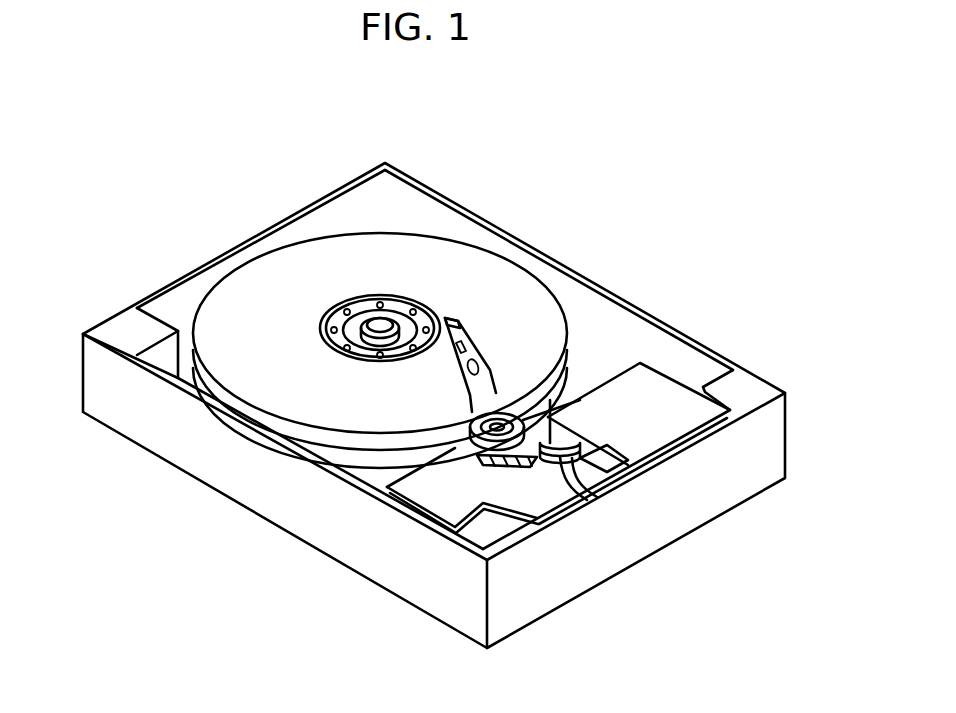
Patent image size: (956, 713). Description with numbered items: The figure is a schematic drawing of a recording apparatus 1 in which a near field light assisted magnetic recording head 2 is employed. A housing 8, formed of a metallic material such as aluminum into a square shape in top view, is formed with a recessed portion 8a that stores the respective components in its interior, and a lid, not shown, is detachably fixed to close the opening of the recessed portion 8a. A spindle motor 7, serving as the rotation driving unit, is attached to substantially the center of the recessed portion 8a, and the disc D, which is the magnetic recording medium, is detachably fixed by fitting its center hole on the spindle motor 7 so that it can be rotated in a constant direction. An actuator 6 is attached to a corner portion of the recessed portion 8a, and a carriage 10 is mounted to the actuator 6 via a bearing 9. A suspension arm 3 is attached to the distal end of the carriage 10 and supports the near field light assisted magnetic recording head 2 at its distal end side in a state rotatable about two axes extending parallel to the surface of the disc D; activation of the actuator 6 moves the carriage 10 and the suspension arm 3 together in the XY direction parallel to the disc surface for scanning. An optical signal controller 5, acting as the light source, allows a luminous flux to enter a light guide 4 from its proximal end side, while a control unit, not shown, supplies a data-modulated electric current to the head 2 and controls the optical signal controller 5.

The recording apparatus 1 is at (765, 142).
The near field light assisted magnetic recording head 2 is at (445, 317).
The suspension arm 3 is at (458, 323).
The light guide 4 is at (600, 500).
The optical signal controller 5 is at (657, 420).
The actuator 6 is at (527, 485).
The spindle motor 7 is at (380, 325).
The housing 8 is at (223, 253).
The recessed portion 8a is at (180, 307).
The bearing 9 is at (500, 383).
The carriage 10 is at (497, 425).
The disc D is at (345, 418).